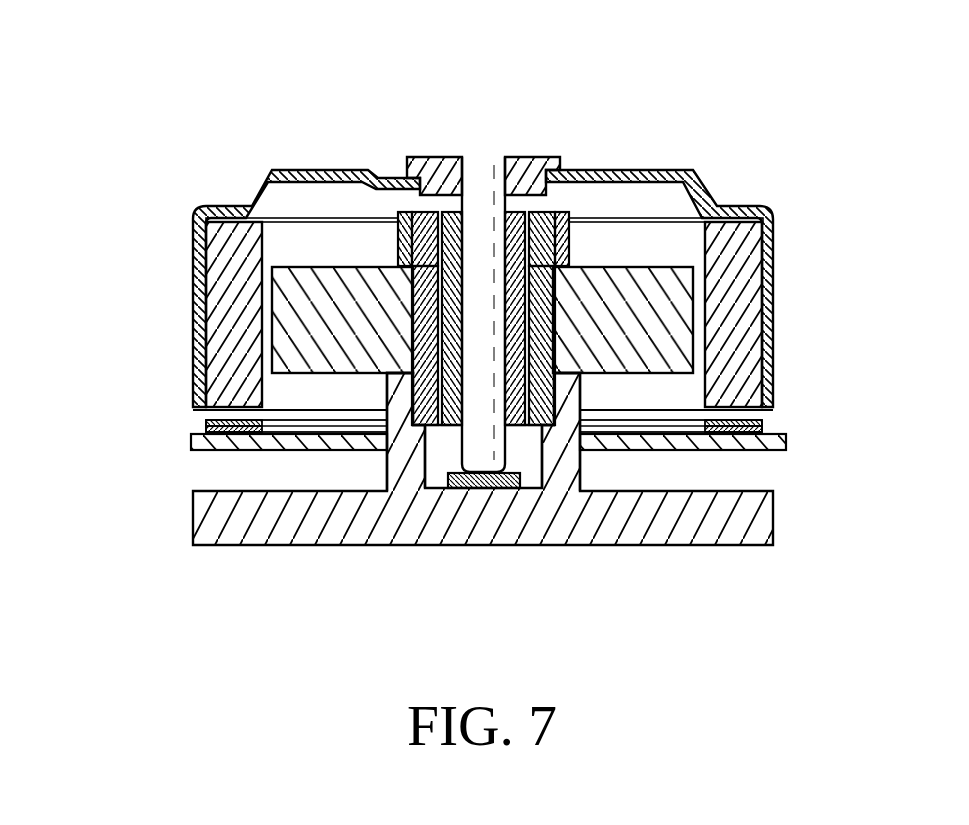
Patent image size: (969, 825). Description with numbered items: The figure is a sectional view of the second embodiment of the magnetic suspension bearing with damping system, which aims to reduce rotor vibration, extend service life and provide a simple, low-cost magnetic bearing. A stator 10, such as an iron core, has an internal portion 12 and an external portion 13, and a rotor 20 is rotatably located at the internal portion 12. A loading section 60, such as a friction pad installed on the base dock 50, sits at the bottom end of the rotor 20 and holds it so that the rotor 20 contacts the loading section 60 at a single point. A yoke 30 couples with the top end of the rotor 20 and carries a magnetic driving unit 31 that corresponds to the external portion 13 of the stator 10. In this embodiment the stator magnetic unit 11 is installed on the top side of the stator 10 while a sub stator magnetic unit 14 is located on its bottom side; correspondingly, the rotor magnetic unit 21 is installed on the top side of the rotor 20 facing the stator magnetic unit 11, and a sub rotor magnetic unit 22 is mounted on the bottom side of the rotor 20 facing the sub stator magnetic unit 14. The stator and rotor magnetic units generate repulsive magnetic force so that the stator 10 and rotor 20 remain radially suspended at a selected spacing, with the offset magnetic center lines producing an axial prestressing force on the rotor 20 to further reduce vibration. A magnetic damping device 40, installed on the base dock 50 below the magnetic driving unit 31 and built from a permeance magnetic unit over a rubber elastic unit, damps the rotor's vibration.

The stator 10 is at (660, 241).
The stator magnetic unit 11 is at (545, 225).
The internal portion 12 is at (525, 405).
The external portion 13 is at (700, 303).
The sub stator magnetic unit 14 is at (548, 392).
The rotor 20 is at (484, 180).
The rotor magnetic unit 21 is at (458, 215).
The sub rotor magnetic unit 22 is at (463, 425).
The yoke 30 is at (228, 212).
The magnetic driving unit 31 is at (218, 285).
The magnetic damping device 40 is at (160, 421).
The base dock 50 is at (283, 512).
The loading section 60 is at (502, 489).